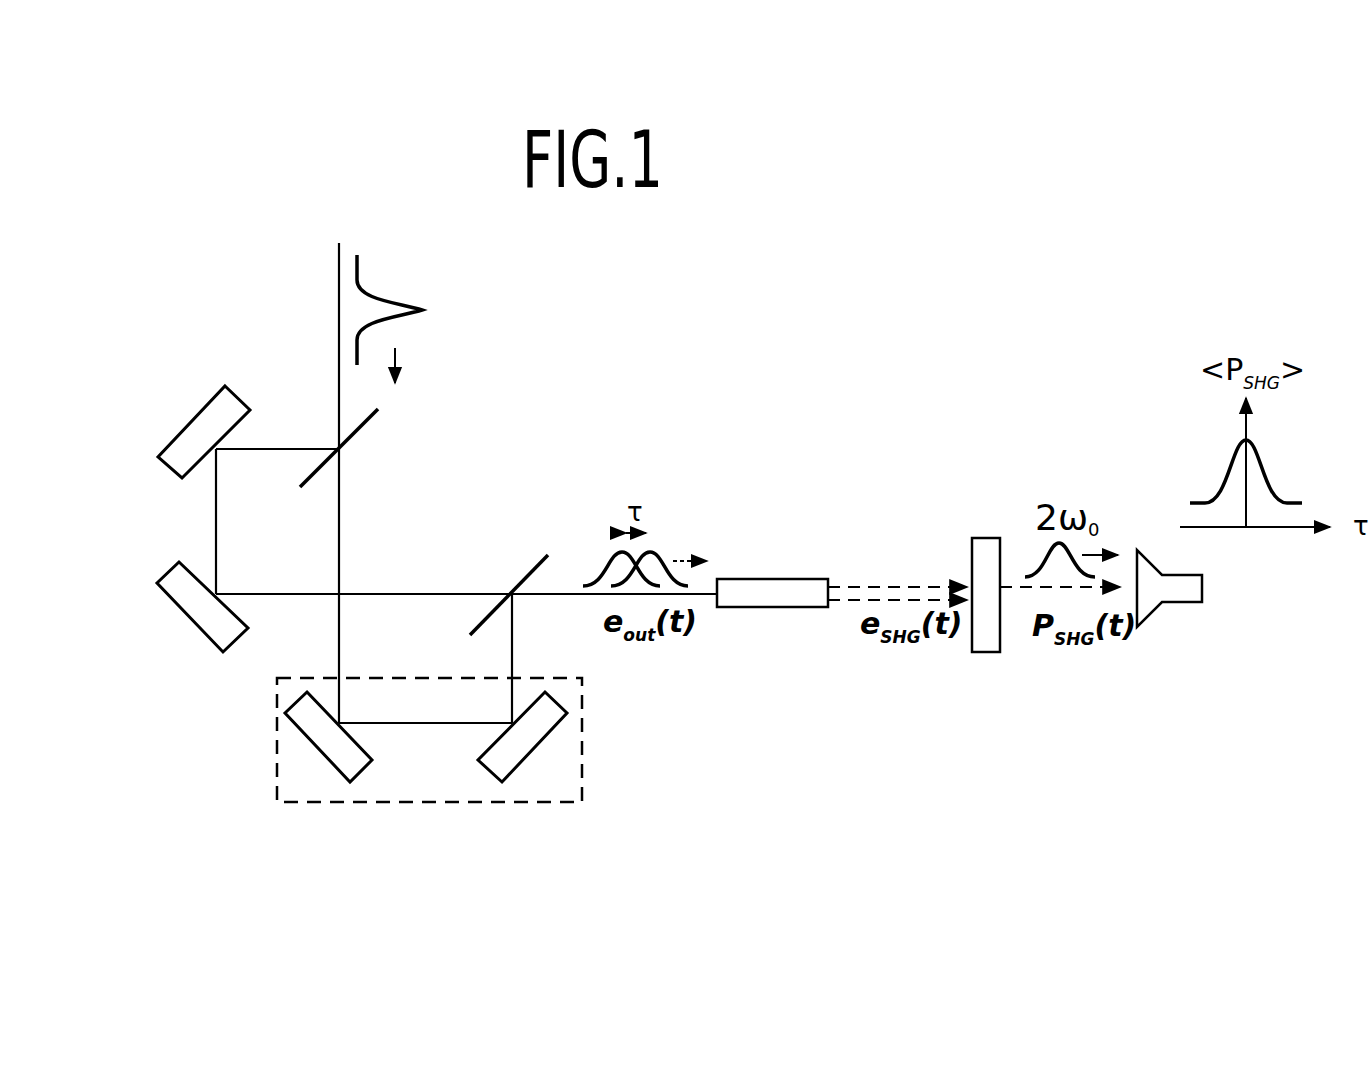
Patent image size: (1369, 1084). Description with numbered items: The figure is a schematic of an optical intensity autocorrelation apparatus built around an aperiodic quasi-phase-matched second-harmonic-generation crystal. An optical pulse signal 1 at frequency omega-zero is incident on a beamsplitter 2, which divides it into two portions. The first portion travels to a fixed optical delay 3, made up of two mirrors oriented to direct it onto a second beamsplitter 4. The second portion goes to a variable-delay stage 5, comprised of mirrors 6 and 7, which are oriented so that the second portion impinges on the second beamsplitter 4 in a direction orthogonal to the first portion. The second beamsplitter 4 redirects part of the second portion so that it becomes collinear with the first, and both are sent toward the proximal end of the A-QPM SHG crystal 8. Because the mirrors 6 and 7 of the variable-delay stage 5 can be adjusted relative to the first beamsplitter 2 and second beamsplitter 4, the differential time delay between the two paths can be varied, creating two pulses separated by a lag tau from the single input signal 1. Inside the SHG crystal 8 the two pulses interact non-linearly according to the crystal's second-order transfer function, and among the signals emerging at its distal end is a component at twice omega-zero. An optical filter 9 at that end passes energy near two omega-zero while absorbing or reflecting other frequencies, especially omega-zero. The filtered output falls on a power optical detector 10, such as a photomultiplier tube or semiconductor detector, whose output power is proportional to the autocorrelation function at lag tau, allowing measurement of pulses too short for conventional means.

The optical pulse signal 1 is at (378, 311).
The beamsplitter 2 is at (356, 442).
The fixed optical delay 3 is at (205, 506).
The second beamsplitter 4 is at (504, 585).
The variable-delay stage 5 is at (275, 792).
The mirror 6 is at (328, 744).
The mirror 7 is at (522, 744).
The A-QPM SHG crystal 8 is at (781, 619).
The optical filter 9 is at (1006, 604).
The power optical detector 10 is at (1193, 627).